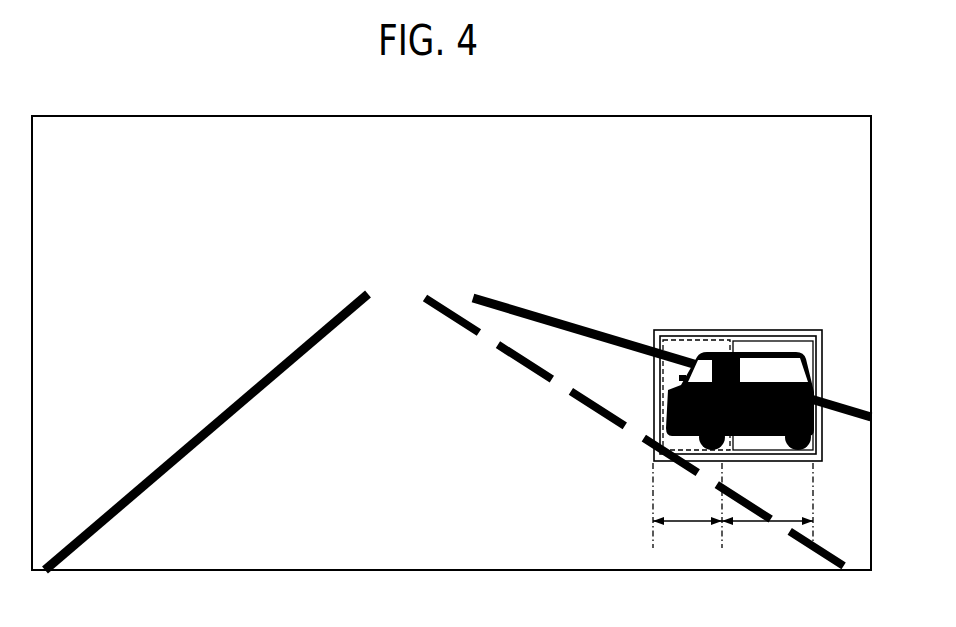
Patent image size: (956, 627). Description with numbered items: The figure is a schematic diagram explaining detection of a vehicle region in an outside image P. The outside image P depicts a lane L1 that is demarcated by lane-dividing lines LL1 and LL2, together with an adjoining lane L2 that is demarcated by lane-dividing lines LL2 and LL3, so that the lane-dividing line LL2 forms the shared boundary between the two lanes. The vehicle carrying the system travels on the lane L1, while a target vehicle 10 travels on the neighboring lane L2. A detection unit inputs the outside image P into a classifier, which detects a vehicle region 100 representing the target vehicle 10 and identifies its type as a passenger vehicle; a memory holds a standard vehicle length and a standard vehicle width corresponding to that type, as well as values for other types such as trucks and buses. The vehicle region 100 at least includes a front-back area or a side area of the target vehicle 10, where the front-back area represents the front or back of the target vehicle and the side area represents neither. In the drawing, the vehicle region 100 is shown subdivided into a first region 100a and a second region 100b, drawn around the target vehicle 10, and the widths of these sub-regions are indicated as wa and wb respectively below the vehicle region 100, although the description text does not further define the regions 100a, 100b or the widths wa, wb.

The outside image P is at (711, 112).
The lane L1 is at (391, 283).
The lane L2 is at (453, 282).
The lane-dividing line LL1 is at (116, 498).
The lane-dividing line LL2 is at (520, 366).
The lane-dividing line LL3 is at (548, 316).
The vehicle region 100 is at (673, 330).
The target vehicle 10 is at (720, 336).
The first region of detection region 100a is at (782, 341).
The second region of detection region 100b is at (654, 403).
The width of second region wb is at (687, 509).
The width of first region wa is at (767, 509).